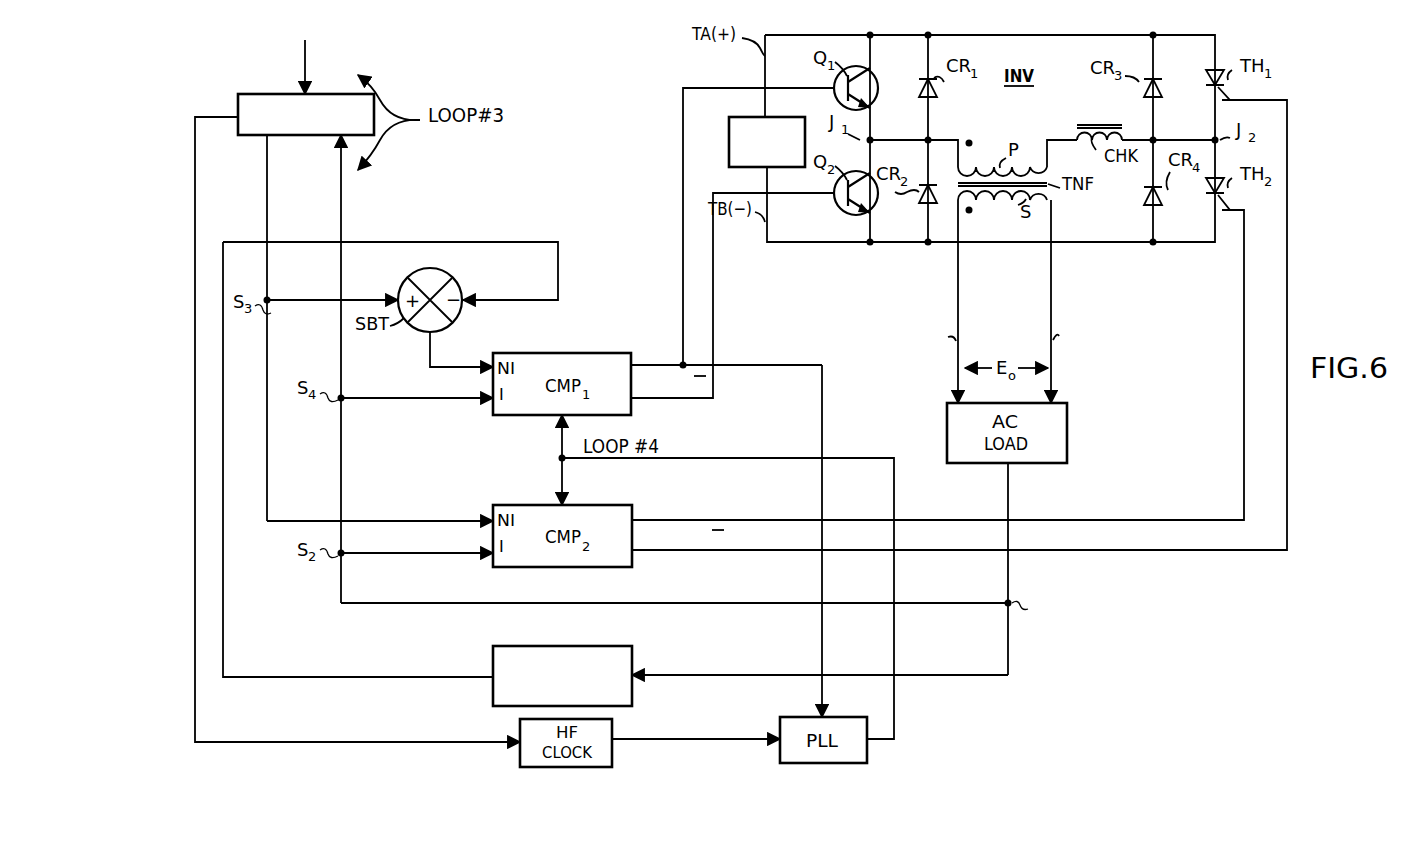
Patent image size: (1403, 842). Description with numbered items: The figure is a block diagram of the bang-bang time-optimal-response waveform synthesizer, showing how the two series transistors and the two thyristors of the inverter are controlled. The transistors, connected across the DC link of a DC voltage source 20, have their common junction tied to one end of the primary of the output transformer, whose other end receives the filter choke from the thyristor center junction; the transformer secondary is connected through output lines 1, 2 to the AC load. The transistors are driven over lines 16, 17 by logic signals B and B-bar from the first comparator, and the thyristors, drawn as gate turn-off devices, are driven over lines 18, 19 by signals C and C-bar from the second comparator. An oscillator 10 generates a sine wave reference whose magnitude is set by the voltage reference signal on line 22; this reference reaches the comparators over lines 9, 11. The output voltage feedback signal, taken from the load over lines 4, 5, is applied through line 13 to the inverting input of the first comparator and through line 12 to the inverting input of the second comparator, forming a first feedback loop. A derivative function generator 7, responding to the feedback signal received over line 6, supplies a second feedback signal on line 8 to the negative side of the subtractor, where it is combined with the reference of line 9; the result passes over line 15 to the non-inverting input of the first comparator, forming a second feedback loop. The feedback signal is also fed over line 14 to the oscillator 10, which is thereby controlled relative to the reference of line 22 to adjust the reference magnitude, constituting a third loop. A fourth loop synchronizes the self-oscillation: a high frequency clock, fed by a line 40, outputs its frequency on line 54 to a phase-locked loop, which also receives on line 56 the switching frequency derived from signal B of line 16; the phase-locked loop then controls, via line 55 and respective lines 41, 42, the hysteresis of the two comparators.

The load line A 1 is at (958, 274).
The load line N 2 is at (1056, 270).
The line 4 is at (1010, 582).
The line 5 is at (506, 604).
The line 6 is at (792, 674).
The derivative function generator 7 is at (605, 650).
The line 8 is at (262, 677).
The line 9 is at (268, 195).
The oscillator 10 is at (272, 90).
The line 11 is at (321, 524).
The line 12 is at (398, 556).
The line 13 is at (394, 402).
The line 14 is at (344, 195).
The line 15 is at (430, 354).
The line 16 is at (660, 364).
The line 17 is at (671, 398).
The line 18 is at (688, 522).
The line 19 is at (690, 554).
The DC voltage source 20 is at (749, 112).
The line 22 is at (305, 64).
The HF clock input line 40 is at (300, 741).
The line 41 is at (562, 452).
The line 42 is at (562, 479).
The line 54 is at (698, 738).
The line 55 is at (785, 461).
The line 56 is at (790, 366).